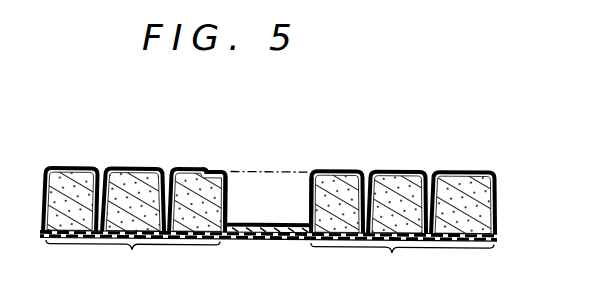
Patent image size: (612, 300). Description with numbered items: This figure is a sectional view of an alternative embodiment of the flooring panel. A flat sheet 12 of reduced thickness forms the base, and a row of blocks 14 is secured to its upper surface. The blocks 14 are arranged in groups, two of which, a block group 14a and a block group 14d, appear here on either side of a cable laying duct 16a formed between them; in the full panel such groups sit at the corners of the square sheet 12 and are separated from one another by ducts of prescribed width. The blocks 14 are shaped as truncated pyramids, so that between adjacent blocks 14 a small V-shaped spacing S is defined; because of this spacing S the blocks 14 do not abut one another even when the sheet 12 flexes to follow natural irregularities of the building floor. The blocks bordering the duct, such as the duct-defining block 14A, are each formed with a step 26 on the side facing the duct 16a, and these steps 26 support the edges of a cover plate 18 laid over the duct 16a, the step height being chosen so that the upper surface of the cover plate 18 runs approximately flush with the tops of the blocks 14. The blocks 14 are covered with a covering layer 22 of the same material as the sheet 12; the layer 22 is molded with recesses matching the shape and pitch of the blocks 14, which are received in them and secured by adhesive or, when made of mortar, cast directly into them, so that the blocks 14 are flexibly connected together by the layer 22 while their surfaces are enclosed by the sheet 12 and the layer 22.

The flat sheet 12 is at (257, 240).
The block 14 is at (400, 183).
The block defining cable laying duct 14A is at (340, 192).
The block group 14a is at (350, 184).
The block group 14d is at (134, 224).
The cable laying duct 16a is at (236, 169).
The cover plate 18 is at (275, 169).
The covering layer 22 is at (497, 199).
The step 26 is at (312, 170).
The spacing S is at (427, 177).